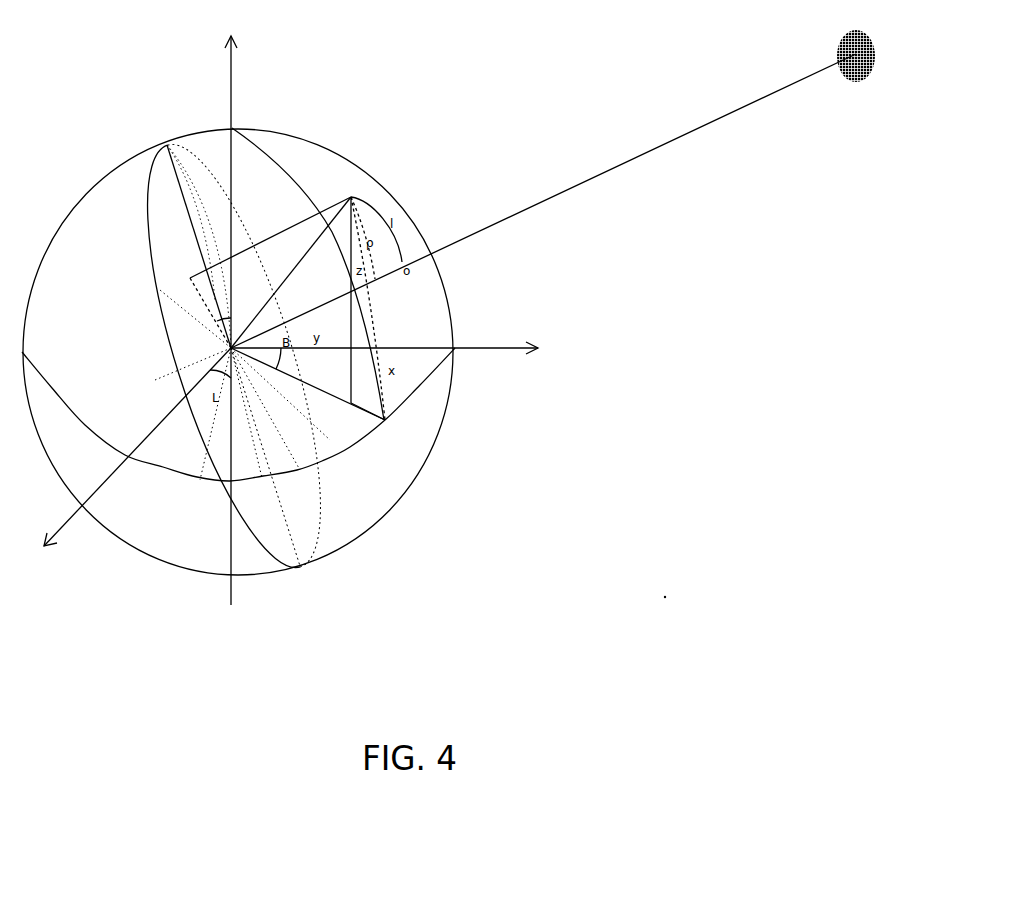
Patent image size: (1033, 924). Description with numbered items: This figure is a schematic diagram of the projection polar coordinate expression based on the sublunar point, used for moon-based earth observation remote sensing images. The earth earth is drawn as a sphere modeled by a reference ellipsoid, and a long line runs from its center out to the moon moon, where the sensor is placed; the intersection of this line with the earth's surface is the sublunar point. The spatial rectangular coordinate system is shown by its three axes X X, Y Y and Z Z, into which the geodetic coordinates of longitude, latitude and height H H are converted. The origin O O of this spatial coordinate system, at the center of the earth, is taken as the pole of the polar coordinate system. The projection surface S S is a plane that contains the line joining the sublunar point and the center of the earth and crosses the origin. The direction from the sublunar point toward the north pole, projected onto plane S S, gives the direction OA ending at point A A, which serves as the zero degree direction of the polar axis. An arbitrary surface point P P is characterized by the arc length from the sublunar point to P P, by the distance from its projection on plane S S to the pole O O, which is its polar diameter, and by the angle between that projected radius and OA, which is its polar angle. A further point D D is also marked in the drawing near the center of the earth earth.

The element earth is at (344, 366).
The element moon is at (554, 189).
The Z axis Z is at (230, 310).
The Y axis Y is at (389, 350).
The X axis X is at (129, 452).
The origin O is at (245, 348).
The polar axis direction point A is at (194, 234).
The point on the ellipsoid P is at (316, 298).
The geodetic height H is at (270, 237).
The point D is at (205, 307).
The projection surface S is at (265, 457).